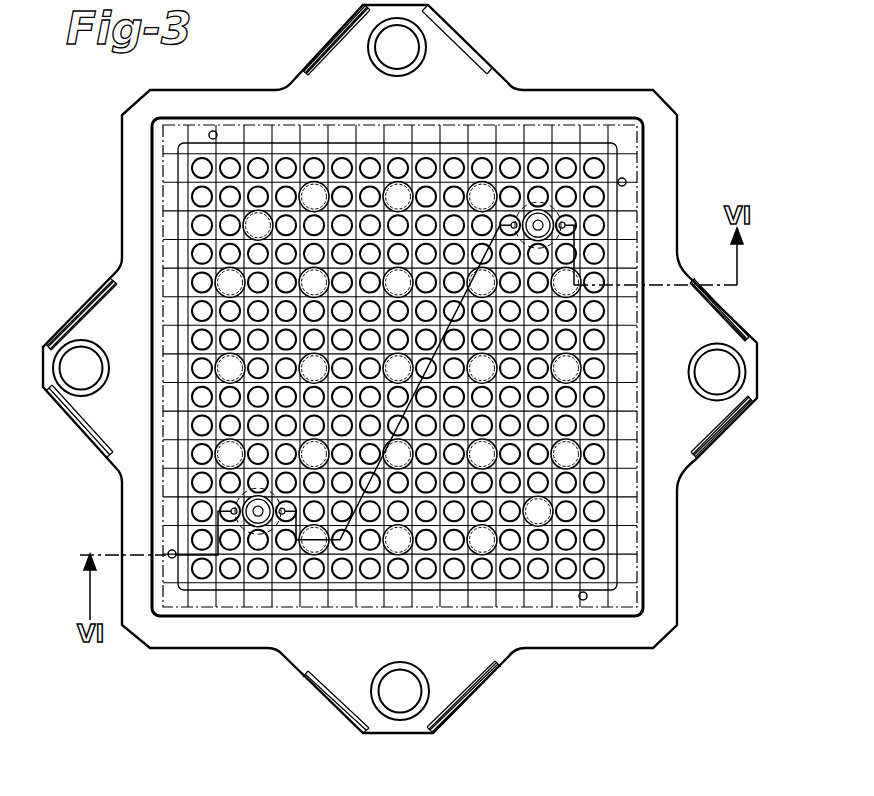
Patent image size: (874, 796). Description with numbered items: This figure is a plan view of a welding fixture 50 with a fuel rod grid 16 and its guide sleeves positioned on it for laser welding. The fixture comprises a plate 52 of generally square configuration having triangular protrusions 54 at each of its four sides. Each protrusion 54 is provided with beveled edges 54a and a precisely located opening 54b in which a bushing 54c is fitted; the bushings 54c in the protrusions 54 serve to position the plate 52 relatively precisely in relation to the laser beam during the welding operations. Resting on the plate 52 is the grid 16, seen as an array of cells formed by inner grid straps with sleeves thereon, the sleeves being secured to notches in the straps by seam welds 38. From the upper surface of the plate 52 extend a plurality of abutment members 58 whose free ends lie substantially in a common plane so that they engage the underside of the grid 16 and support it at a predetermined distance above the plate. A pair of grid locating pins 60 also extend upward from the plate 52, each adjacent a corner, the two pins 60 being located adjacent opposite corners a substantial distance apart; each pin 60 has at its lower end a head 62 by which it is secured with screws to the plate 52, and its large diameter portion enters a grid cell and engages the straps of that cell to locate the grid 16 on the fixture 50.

The fuel rod grid 16 is at (565, 133).
The seam welds 38 is at (216, 131).
The welding fixture 50 is at (686, 93).
The plate 52 is at (678, 140).
The triangular protrusions 54 is at (467, 62).
The beveled edges 54a is at (720, 435).
The opening 54b is at (712, 352).
The bushing 54c is at (708, 387).
The abutment members 58 is at (626, 180).
The grid locating pins 60 is at (552, 222).
The head 62 is at (232, 497).